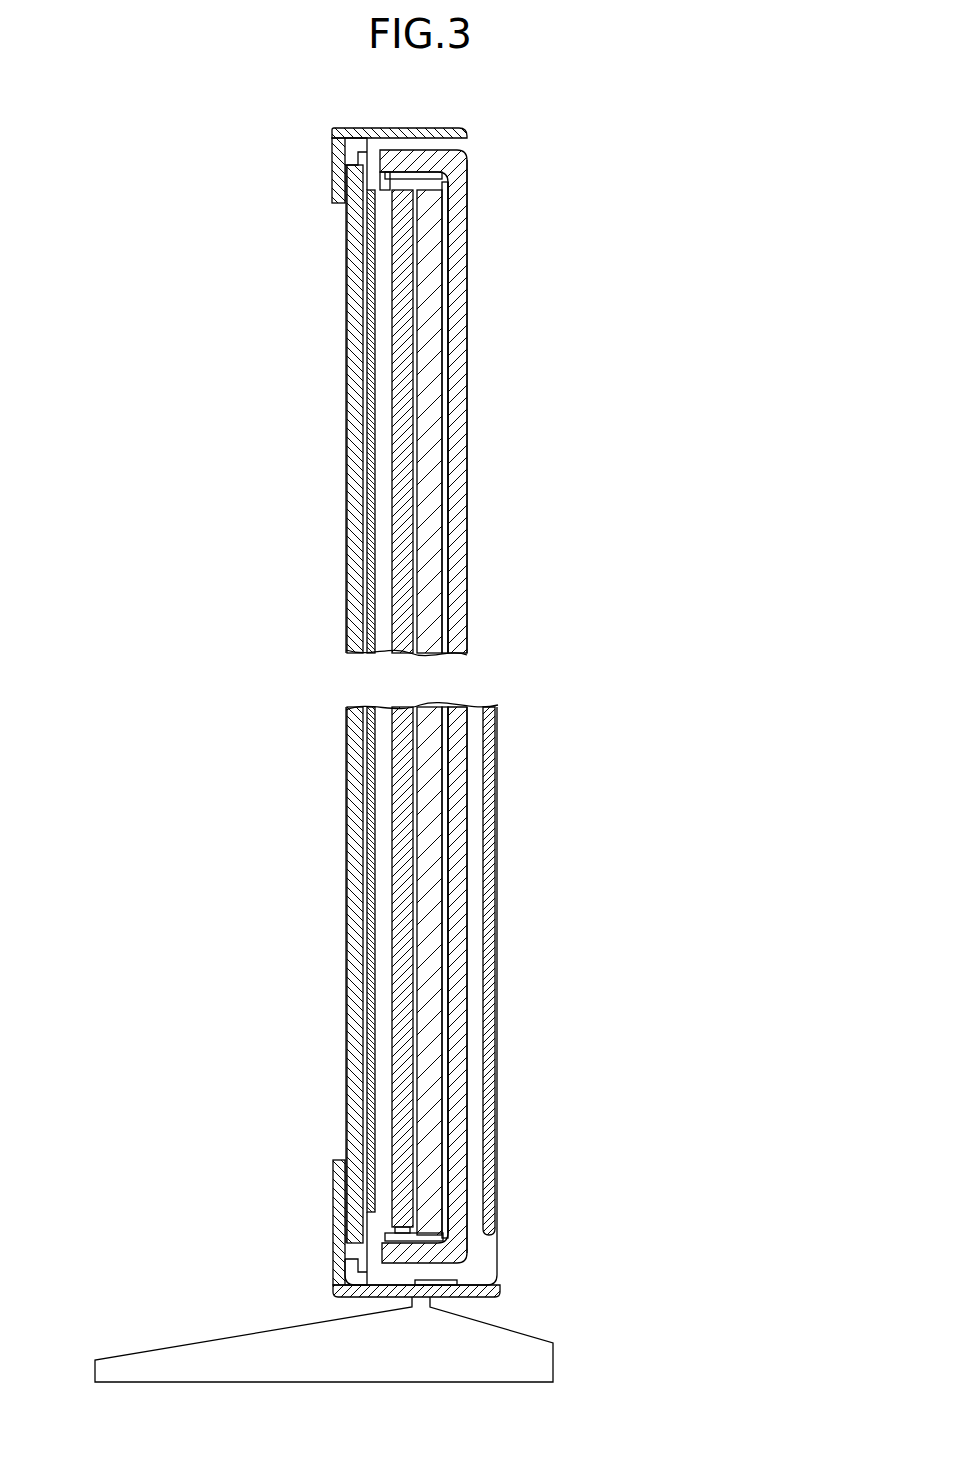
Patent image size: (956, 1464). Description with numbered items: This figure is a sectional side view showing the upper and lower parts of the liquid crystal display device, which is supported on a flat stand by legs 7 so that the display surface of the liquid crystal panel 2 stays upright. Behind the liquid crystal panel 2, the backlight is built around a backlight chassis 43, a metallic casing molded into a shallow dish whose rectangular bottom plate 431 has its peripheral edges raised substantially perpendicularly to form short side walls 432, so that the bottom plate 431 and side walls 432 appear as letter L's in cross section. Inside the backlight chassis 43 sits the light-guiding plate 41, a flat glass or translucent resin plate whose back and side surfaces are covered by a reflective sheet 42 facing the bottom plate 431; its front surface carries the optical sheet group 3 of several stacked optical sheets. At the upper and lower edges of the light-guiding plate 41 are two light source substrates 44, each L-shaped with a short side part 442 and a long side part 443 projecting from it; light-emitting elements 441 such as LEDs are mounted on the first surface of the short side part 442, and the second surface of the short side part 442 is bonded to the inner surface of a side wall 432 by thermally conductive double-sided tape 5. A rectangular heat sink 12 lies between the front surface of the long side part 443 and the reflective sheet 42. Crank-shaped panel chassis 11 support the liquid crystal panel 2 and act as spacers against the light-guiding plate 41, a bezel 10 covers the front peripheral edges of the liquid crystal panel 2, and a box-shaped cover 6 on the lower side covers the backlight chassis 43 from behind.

The liquid crystal panel 2 is at (346, 346).
The optical sheet group 3 is at (350, 400).
The double-sided tape 5 is at (415, 172).
The cover 6 is at (490, 822).
The legs 7 is at (543, 1362).
The bezel 10 is at (332, 165).
The panel chassis 11 is at (358, 156).
The heat sink 12 is at (455, 555).
The light-guiding plate 41 is at (405, 405).
The reflective sheet 42 is at (430, 452).
The backlight chassis 43 is at (593, 135).
The light source substrate 44 is at (593, 230).
The bottom plate 431 is at (466, 200).
The side walls 432 is at (440, 160).
The light-emitting elements 441 is at (412, 198).
The short side part 442 is at (403, 186).
The long side part 443 is at (447, 293).